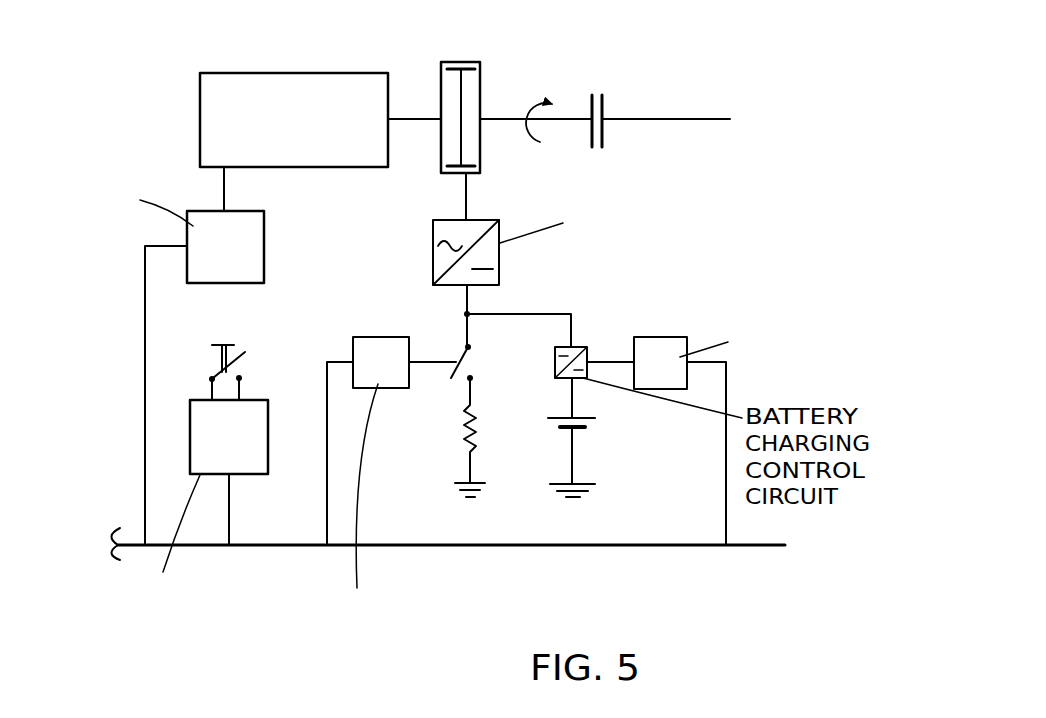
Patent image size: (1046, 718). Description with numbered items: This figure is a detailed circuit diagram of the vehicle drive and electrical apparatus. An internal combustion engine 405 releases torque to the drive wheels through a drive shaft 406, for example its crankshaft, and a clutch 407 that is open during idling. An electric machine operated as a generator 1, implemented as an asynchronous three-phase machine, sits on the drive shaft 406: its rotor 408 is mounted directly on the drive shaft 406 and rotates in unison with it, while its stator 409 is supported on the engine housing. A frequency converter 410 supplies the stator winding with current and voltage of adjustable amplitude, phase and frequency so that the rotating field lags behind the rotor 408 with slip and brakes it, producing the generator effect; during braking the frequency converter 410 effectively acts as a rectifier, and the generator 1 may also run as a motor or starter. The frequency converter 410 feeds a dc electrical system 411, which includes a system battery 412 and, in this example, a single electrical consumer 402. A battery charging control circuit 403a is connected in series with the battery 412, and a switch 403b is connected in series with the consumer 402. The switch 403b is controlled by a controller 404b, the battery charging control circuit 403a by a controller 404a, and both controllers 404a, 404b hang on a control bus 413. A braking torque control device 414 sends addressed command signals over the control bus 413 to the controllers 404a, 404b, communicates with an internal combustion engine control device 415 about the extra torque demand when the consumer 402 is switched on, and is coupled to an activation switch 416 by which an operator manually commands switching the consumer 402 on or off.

The generator 1 is at (428, 102).
The electrical consumer 402 is at (472, 432).
The battery charging control circuit 403a is at (580, 347).
The switch 403b is at (460, 355).
The controller 404a is at (690, 312).
The controller 404b is at (363, 338).
The internal combustion engine 405 is at (288, 76).
The drive shaft 406 is at (513, 116).
The clutch 407 is at (605, 112).
The rotor 408 is at (462, 95).
The stator 409 is at (462, 62).
The frequency converter 410 is at (495, 249).
The dc electrical system 411 is at (508, 500).
The system battery 412 is at (590, 423).
The control bus 413 is at (297, 547).
The braking torque control device 414 is at (182, 528).
The internal combustion engine control device 415 is at (147, 338).
The activation switch 416 is at (233, 360).